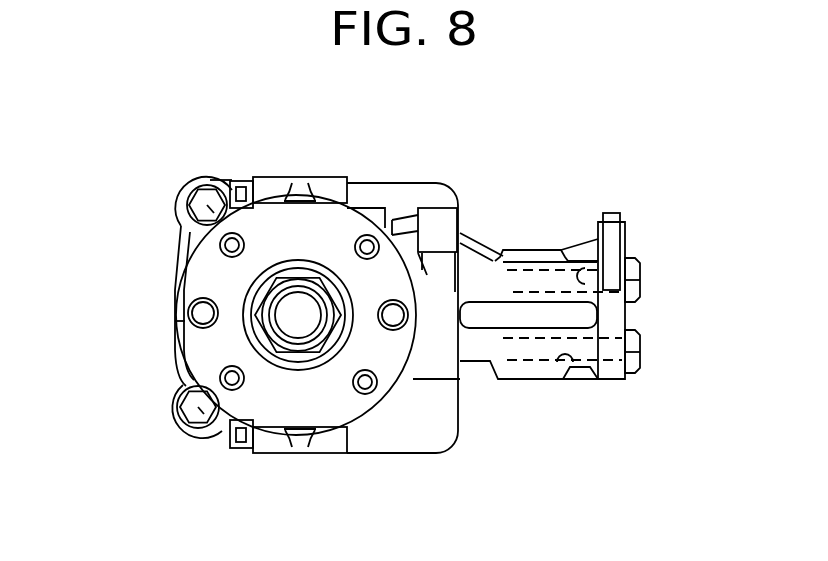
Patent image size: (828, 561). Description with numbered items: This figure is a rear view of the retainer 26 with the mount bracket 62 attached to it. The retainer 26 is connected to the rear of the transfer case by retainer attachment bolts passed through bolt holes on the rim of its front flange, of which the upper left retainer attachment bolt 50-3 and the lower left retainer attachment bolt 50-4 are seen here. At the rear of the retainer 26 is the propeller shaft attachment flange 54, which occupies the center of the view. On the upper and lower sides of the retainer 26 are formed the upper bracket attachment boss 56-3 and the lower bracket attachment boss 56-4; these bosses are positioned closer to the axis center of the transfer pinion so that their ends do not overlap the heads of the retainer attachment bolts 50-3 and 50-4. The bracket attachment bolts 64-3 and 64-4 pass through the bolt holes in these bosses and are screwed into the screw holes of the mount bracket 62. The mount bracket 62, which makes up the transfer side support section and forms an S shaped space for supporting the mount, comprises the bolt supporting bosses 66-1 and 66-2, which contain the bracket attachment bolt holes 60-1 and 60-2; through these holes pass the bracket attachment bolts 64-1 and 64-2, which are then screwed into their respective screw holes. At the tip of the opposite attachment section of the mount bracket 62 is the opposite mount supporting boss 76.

The retainer 26 is at (393, 181).
The propeller shaft attachment flange 54 is at (215, 344).
The NO. 3 bracket attachment boss 56-3 is at (327, 186).
The NO. 4 bracket attachment boss 56-4 is at (332, 442).
The NO. 3 bracket attachment bolt 64-3 is at (240, 184).
The NO. 4 bracket attachment bolt 64-4 is at (238, 450).
The NO. 3 retainer attachment bolt 50-3 is at (192, 197).
The NO. 4 retainer attachment bolt 50-4 is at (182, 428).
The NO. 2 bolt supporting boss 66-2 is at (519, 262).
The NO. 1 bolt supporting boss 66-1 is at (541, 372).
The mount bracket 62 is at (561, 244).
The NO. 1 bracket attachment bolt hole 60-1 is at (612, 252).
The NO. 2 bracket attachment bolt hole 60-2 is at (594, 383).
The opposite mount supporting boss 76 is at (611, 217).
The NO. 1 bracket attachment bolt 64-1 is at (641, 280).
The NO. 2 bracket attachment bolt 64-2 is at (641, 344).